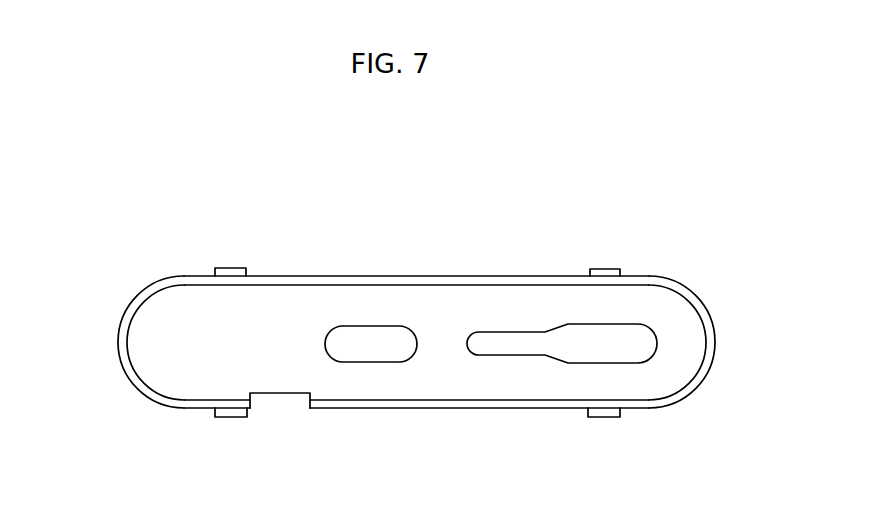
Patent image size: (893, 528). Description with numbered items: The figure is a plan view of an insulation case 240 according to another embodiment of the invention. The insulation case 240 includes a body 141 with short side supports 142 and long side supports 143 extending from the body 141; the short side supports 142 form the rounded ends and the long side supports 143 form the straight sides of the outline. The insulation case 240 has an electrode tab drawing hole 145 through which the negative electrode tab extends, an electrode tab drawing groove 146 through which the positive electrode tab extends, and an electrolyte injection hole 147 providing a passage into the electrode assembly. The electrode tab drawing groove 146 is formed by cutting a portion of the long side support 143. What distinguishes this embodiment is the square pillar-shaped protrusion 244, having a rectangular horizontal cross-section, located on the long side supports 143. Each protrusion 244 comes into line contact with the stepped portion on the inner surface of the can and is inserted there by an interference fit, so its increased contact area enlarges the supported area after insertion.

The insulation case 240 is at (525, 227).
The body 141 is at (527, 382).
The short side support 142 is at (135, 299).
The long side support 143 is at (449, 284).
The electrode tab drawing hole 145 is at (585, 352).
The electrode tab drawing groove 146 is at (279, 394).
The electrolyte injection hole 147 is at (365, 350).
The square pillar-shaped protrusion 244 is at (226, 270).